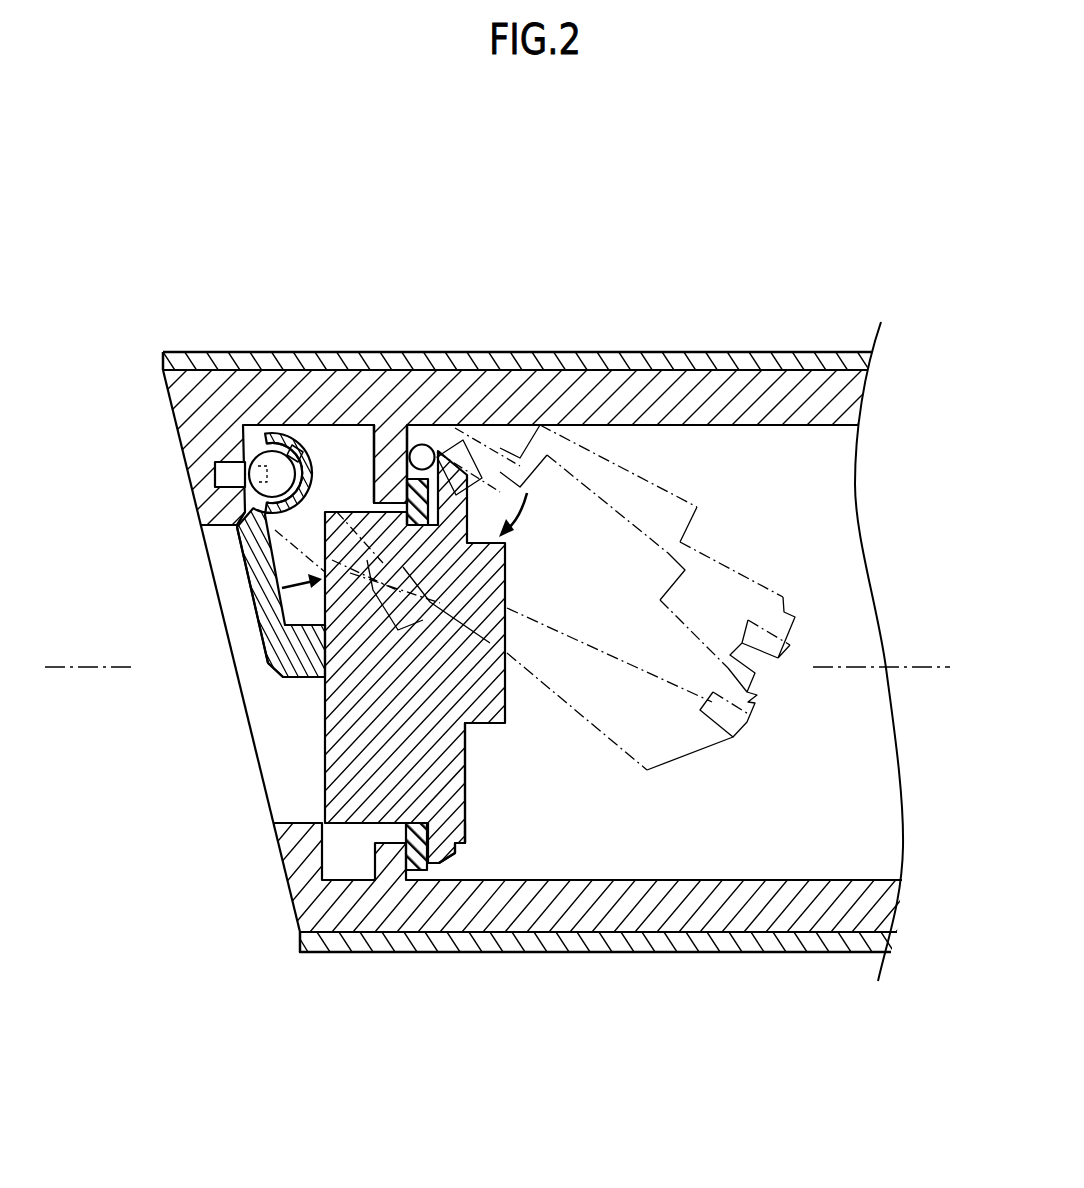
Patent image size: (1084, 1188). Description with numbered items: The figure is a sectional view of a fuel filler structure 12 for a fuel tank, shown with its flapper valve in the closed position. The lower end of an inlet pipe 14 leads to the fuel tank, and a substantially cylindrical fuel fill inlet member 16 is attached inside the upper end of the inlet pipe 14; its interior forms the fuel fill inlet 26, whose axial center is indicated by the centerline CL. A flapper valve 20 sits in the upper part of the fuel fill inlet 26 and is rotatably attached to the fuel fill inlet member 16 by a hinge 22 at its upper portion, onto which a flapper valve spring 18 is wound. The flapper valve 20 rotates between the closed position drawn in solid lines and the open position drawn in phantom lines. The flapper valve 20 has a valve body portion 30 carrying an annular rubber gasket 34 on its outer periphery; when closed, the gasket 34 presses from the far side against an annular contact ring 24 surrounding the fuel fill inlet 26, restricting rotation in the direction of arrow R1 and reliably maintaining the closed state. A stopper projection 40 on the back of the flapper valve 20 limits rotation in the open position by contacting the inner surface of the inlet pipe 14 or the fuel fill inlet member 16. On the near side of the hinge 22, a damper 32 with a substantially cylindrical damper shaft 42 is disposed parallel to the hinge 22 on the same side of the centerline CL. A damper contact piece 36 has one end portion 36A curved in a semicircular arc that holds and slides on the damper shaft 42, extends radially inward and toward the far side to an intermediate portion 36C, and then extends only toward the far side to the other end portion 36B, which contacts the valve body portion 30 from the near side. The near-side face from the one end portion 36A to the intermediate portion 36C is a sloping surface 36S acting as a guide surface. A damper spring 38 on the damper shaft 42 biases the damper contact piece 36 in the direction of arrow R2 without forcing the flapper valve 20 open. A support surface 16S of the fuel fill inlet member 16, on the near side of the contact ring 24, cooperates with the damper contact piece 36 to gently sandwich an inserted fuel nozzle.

The fuel filler structure 12 is at (601, 276).
The inlet pipe 14 is at (828, 946).
The fuel fill inlet member 16 is at (170, 408).
The support surface 16S is at (295, 823).
The flapper valve spring 18 is at (380, 470).
The flapper valve 20 is at (467, 771).
The hinge 22 is at (419, 443).
The contact ring 24 is at (375, 472).
The fuel fill inlet 26 is at (703, 836).
The valve body portion 30 is at (452, 830).
The damper 32 is at (313, 443).
The gasket 34 is at (417, 857).
The damper contact piece 36 is at (258, 578).
The one end portion 36A is at (236, 519).
The other end portion 36B is at (327, 668).
The intermediate portion 36C is at (278, 648).
The sloping surface 36S is at (258, 613).
The damper spring 38 is at (222, 462).
The stopper projection 40 is at (515, 424).
The damper shaft 42 is at (272, 456).
The direction of arrow R1 is at (522, 514).
The direction of arrow R2 is at (303, 592).
The centerline CL is at (918, 662).